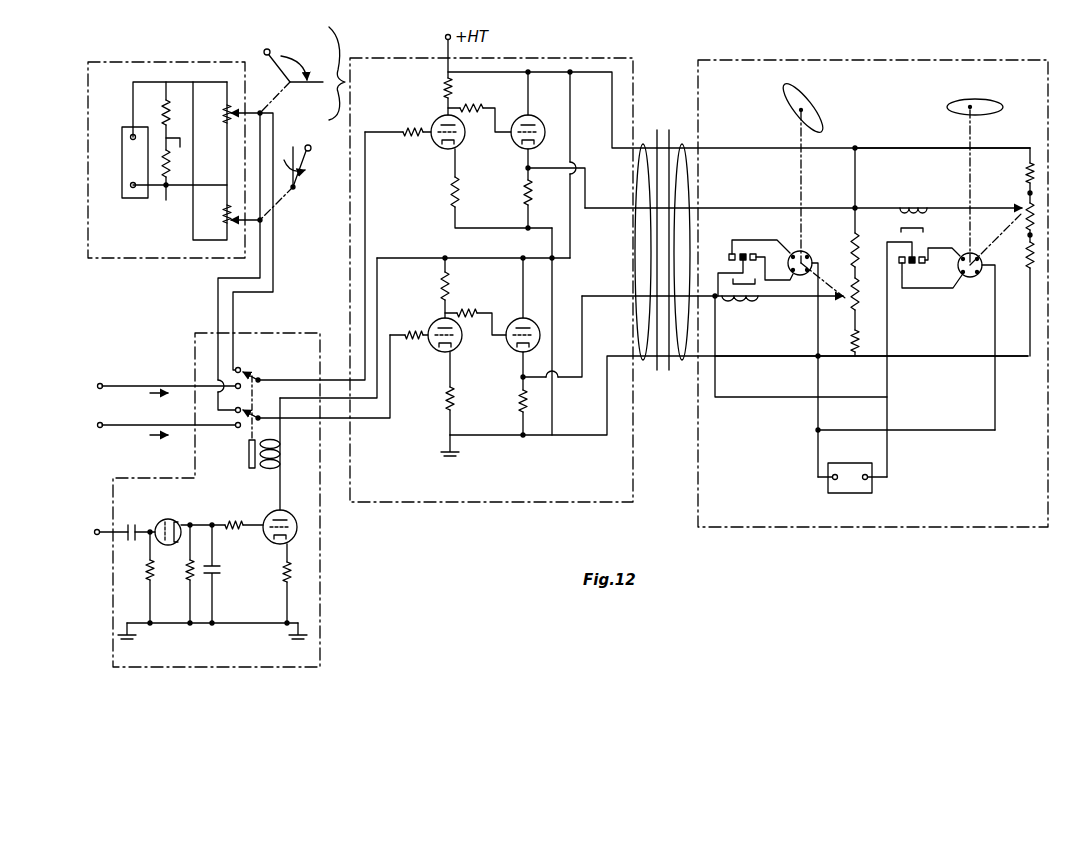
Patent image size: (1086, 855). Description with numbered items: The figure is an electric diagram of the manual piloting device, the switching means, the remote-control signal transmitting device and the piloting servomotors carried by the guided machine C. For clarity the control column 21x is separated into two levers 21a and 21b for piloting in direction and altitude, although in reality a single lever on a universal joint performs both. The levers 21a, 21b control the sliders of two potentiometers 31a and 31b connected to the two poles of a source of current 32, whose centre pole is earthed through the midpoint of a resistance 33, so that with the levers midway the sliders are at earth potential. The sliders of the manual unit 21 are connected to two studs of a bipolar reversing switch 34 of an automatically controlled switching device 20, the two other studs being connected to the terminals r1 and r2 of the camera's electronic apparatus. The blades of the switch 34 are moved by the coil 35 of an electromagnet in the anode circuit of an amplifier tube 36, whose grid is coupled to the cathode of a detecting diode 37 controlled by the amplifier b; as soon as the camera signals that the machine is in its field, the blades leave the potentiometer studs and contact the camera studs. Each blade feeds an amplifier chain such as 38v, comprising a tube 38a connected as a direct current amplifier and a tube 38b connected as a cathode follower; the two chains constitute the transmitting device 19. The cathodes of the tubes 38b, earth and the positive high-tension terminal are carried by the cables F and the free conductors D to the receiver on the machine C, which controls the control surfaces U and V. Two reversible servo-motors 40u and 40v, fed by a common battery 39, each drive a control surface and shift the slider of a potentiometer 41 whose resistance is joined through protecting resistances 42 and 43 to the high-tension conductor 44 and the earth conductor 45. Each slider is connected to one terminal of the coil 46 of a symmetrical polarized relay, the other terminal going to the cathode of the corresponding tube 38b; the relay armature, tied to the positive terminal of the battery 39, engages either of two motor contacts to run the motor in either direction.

The control signal transmitting device 19 is at (459, 505).
The automatically controlled switching device 20 is at (322, 530).
The manual piloting unit 21 is at (88, 198).
The lever for piloting in direction 21a is at (308, 145).
The lever for piloting in altitude 21b is at (282, 62).
The control column 21x is at (350, 77).
The potentiometer 31a is at (227, 208).
The potentiometer 31b is at (227, 108).
The source of current 32 is at (121, 133).
The resistance 33 is at (165, 108).
The bipolar reversing switch 34 is at (257, 396).
The coil of electromagnet 35 is at (249, 458).
The amplifier tube 36 is at (291, 541).
The detecting diode 37 is at (163, 546).
The tube connected as direct current amplifier 38a is at (451, 112).
The tube connected as cathode follower 38b is at (530, 116).
The amplifier chain 38v is at (607, 44).
The battery 39 is at (850, 494).
The reversible servo-motor 40u is at (803, 251).
The reversible servo-motor 40v is at (970, 279).
The potentiometer 41 is at (857, 292).
The protecting resistance 42 is at (857, 240).
The protecting resistance 43 is at (858, 345).
The high-tension conductor 44 is at (896, 149).
The earth conductor 45 is at (950, 363).
The coil of symmetrical polarized relay 46 is at (740, 300).
The cables F is at (645, 146).
The free conductors D is at (682, 358).
The rudder control surfaces U is at (806, 100).
The control surface V is at (992, 106).
The guided machine C is at (875, 531).
The terminal of the electronic apparatus r1 is at (153, 377).
The terminal of the electronic apparatus r2 is at (147, 433).
The amplifier b is at (116, 528).